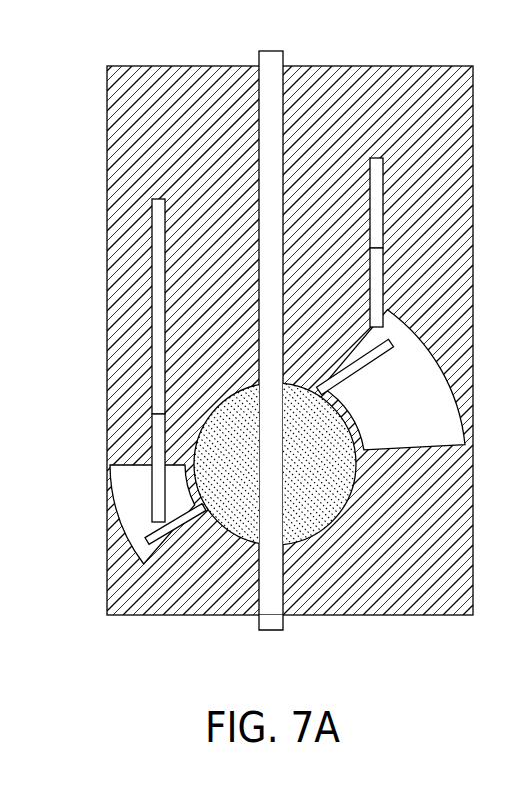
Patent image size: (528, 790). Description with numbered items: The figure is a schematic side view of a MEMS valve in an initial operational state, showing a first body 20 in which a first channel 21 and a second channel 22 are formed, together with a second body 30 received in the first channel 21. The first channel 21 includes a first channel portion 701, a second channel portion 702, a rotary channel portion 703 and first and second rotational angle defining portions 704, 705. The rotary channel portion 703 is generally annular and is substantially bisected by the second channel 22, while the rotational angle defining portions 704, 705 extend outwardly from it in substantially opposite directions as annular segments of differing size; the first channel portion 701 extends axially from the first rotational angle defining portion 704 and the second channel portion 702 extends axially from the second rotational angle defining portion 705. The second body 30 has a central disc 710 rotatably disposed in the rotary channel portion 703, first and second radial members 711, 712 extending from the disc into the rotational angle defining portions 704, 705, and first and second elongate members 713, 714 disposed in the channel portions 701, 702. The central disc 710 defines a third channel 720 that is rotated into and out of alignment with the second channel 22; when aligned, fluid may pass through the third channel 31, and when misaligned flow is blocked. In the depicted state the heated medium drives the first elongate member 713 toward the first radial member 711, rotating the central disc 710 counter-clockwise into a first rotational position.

The first body 20 is at (127, 70).
The first channel 21 is at (384, 231).
The second channel 22 is at (271, 64).
The second body 30 is at (307, 530).
The third channel 31 is at (275, 585).
The first channel portion 701 is at (160, 200).
The second channel portion 702 is at (375, 176).
The rotary channel portion 703 is at (240, 530).
The first rotational angle defining portion 704 is at (136, 523).
The second rotational angle defining portion 705 is at (447, 448).
The central disc 710 is at (323, 494).
The first radial member 711 is at (152, 543).
The second radial member 712 is at (369, 363).
The first elongate member 713 is at (156, 437).
The second elongate member 714 is at (375, 290).
The third channel 720 is at (283, 459).